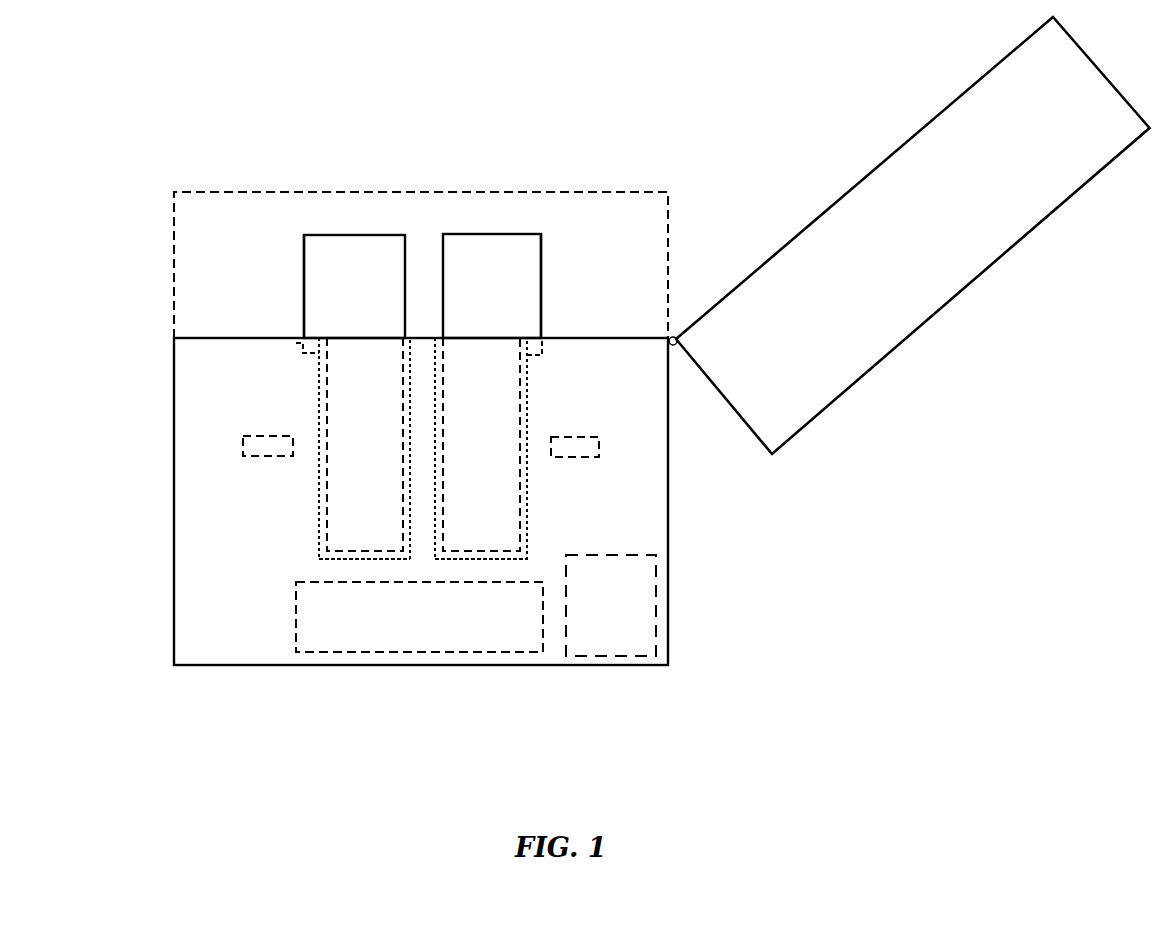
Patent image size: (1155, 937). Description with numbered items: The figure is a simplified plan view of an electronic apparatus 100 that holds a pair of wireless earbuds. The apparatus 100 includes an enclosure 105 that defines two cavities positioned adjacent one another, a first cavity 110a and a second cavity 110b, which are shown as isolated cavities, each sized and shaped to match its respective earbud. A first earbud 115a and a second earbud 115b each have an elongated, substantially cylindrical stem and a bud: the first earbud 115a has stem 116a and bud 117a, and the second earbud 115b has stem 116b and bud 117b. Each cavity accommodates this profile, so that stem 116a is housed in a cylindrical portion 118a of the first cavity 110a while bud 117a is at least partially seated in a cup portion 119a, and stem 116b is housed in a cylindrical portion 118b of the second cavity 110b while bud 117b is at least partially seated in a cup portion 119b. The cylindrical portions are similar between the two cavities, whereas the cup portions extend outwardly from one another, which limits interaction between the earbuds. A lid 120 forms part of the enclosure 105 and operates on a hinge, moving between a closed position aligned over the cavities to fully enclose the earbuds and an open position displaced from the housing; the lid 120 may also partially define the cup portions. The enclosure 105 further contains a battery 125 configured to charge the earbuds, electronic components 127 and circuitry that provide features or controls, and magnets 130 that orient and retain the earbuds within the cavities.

The electronic apparatus 100 is at (222, 108).
The enclosure 105 is at (668, 537).
The first cavity 110a is at (319, 538).
The second cavity 110b is at (527, 503).
The first earbud 115a is at (341, 235).
The second earbud 115b is at (491, 234).
The stem of first earbud 116a is at (327, 520).
The stem of second earbud 116b is at (522, 530).
The bud of first earbud 117a is at (304, 305).
The bud of second earbud 117b is at (541, 245).
The cylindrical portion of first cavity 118a is at (319, 548).
The cylindrical portion of second cavity 118b is at (527, 553).
The cup portion of first cavity 119a is at (300, 341).
The cup portion of second cavity 119b is at (530, 355).
The lid 120 is at (847, 192).
The battery 125 is at (332, 652).
The electronic components 127 is at (605, 656).
The magnets 130 is at (243, 448).